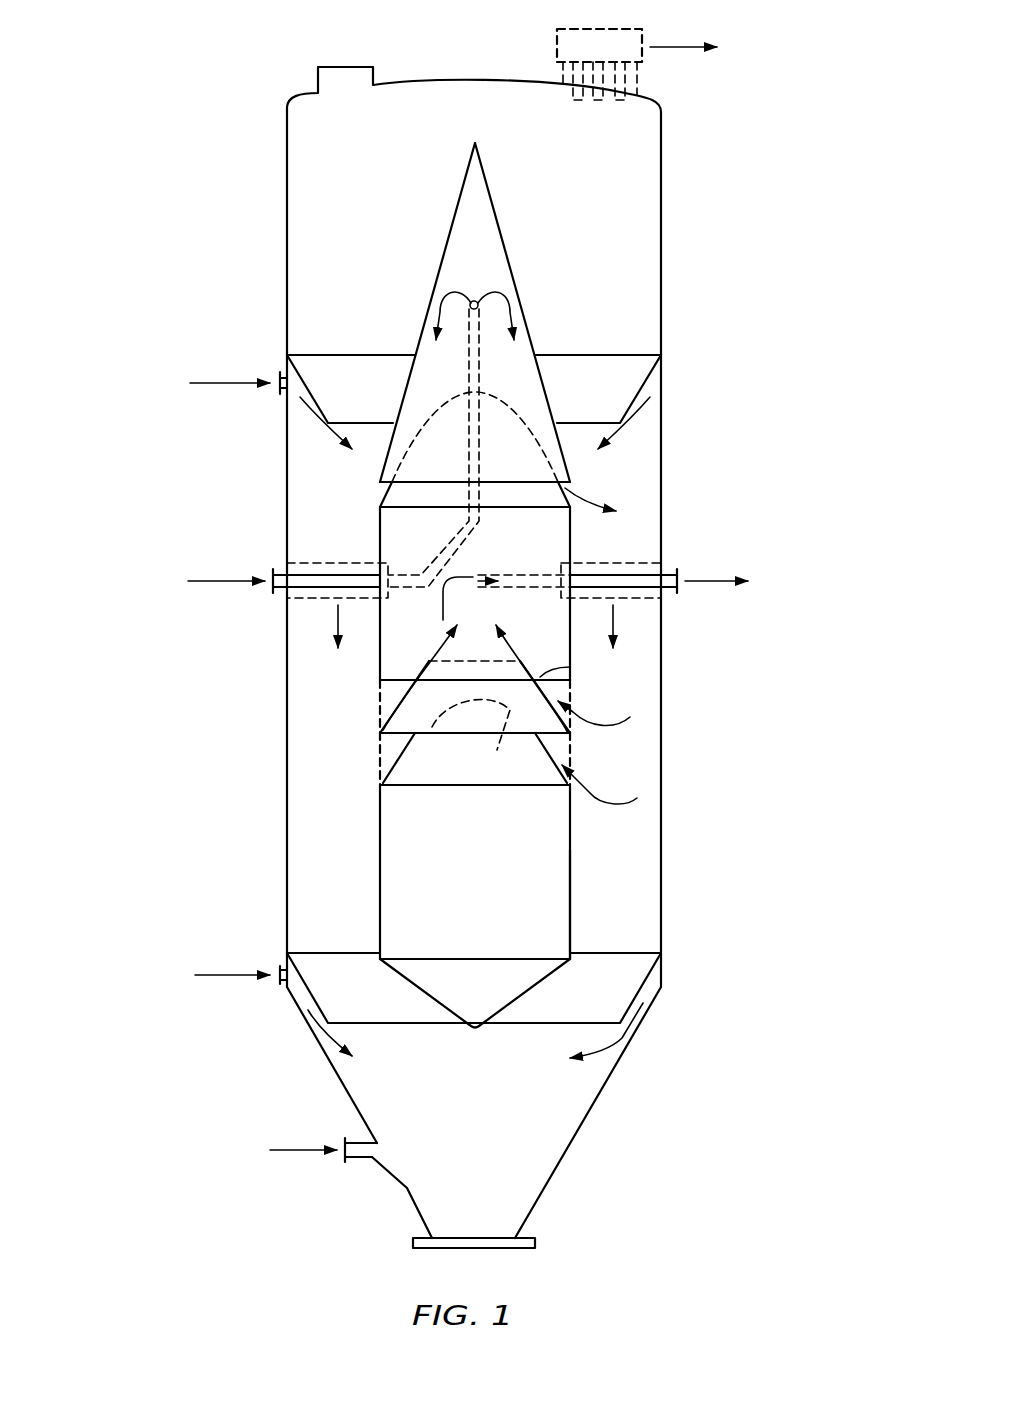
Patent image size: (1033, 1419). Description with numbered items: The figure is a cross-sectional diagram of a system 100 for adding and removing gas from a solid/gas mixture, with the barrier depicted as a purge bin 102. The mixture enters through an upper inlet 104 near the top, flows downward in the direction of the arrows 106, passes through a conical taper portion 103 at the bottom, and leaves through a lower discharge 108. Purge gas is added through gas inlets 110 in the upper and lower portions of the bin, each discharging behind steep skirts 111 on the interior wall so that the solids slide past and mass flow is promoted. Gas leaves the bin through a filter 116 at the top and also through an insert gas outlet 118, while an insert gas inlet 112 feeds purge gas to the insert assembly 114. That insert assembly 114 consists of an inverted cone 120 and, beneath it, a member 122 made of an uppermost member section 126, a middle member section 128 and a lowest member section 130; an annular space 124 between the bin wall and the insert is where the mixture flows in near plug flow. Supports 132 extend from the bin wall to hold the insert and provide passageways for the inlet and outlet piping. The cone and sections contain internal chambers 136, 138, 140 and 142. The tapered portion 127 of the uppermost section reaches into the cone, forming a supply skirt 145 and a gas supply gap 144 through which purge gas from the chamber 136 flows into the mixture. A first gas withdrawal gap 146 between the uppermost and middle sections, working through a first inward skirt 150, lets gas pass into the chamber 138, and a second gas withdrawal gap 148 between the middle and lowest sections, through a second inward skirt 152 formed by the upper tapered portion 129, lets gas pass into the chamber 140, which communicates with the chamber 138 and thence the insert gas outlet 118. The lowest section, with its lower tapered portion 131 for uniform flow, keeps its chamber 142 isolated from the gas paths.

The system 100 is at (130, 117).
The purge bin 102 is at (287, 654).
The taper portion 103 is at (650, 1050).
The upper inlet 104 is at (316, 73).
The arrows 106 is at (338, 619).
The lower discharge 108 is at (515, 1246).
The gas inlets 110 is at (282, 372).
The skirts 111 is at (310, 365).
The insert gas inlet 112 is at (282, 573).
The insert assembly 114 is at (592, 246).
The filter 116 is at (557, 46).
The insert gas outlet 118 is at (668, 572).
The inverted cone 120 is at (493, 200).
The member 122 is at (610, 737).
The annular space 124 is at (400, 740).
The uppermost member section 126 is at (570, 533).
The tapered portion 127 is at (415, 432).
The middle member section 128 is at (570, 735).
The upper tapered portion 129 is at (413, 738).
The lowest member section 130 is at (570, 868).
The lower tapered portion 131 is at (442, 1008).
The supports 132 is at (322, 563).
The chamber 136 is at (515, 358).
The chamber 138 is at (398, 650).
The chamber 140 is at (471, 737).
The chamber 142 is at (550, 903).
The gas supply gap 144 is at (378, 500).
The supply skirt 145 is at (378, 483).
The first gas withdrawal gap 146 is at (380, 710).
The second gas withdrawal gap 148 is at (400, 770).
The first inward skirt 150 is at (380, 697).
The second inward skirt 152 is at (393, 785).